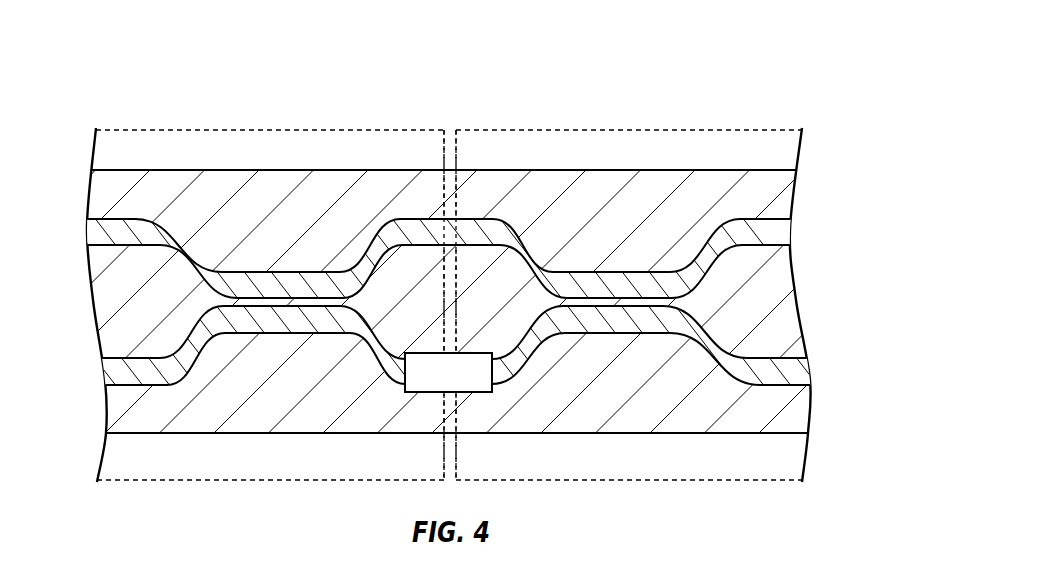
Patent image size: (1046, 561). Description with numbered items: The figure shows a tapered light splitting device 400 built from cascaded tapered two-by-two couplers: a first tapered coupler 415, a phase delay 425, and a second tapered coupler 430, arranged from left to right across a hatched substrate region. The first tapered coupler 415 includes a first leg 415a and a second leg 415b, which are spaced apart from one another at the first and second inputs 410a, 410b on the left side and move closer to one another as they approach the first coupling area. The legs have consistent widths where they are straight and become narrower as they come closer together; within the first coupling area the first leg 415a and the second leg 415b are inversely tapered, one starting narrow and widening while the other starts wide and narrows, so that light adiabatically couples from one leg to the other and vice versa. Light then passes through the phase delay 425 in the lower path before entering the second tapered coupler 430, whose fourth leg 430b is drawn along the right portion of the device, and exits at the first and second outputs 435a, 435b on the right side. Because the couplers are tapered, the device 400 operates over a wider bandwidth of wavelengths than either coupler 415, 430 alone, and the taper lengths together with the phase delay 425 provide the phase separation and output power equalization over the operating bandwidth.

The tapered light splitting device 400 is at (108, 55).
The first tapered coupler 415 is at (251, 130).
The second tapered coupler 430 is at (632, 130).
The first leg 415a is at (280, 272).
The second leg 415b is at (280, 333).
The fourth leg 430b is at (637, 272).
The first input 410a is at (85, 229).
The second input 410b is at (105, 378).
The first output 435a is at (792, 232).
The second output 435b is at (810, 376).
The phase delay 425 is at (422, 393).